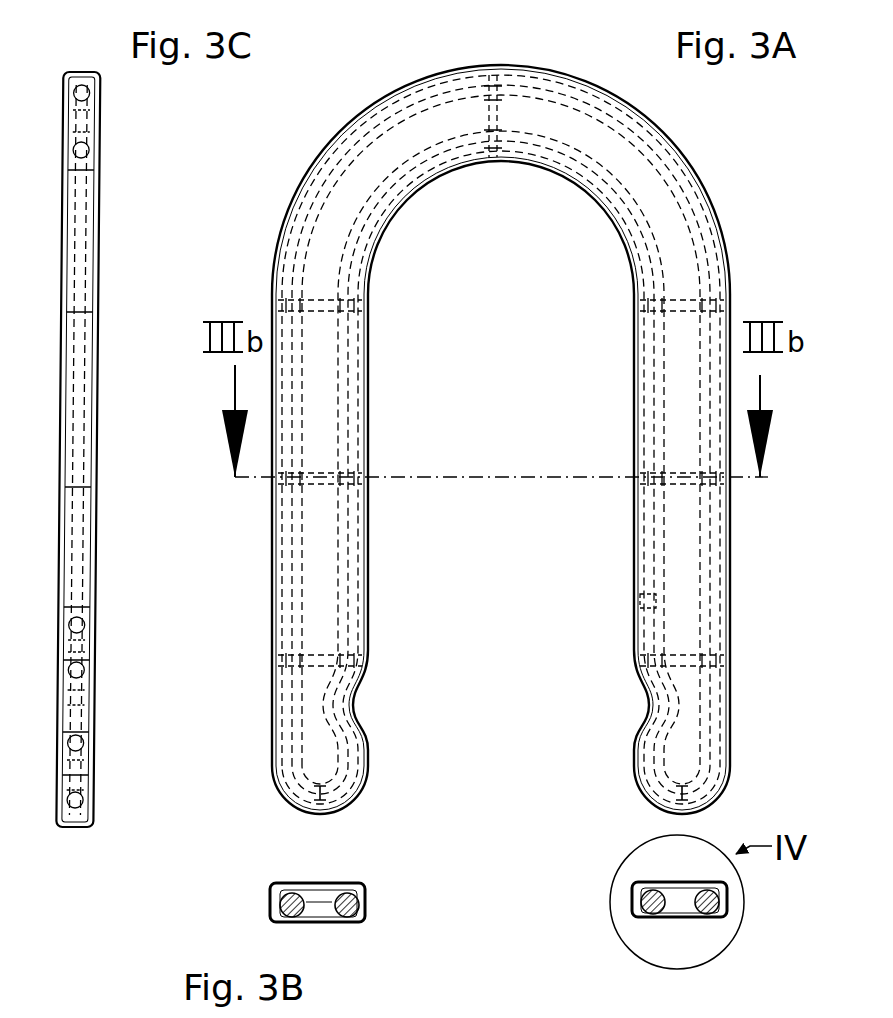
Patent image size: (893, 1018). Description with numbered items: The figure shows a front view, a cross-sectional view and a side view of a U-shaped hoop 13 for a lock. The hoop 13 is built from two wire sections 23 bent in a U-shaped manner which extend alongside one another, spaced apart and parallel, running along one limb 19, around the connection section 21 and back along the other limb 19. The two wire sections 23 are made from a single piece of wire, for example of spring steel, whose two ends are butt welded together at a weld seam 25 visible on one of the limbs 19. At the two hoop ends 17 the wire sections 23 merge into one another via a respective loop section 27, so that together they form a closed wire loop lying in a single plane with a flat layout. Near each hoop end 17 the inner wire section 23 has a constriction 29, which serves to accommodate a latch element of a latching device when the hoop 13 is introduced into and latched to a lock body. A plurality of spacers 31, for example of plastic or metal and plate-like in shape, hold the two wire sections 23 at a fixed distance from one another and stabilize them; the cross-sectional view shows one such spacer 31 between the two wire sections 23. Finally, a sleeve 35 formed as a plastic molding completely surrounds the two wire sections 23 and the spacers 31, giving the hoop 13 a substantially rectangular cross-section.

In FIG. 3A, the hoop 13 is at (383, 74).
In FIG. 3C, the hoop 13 is at (122, 173).
In FIG. 3A, the hoop ends 17 is at (248, 782).
In FIG. 3A, the limb 19 is at (276, 556).
In FIG. 3A, the connection section 21 is at (345, 136).
In FIG. 3A, the wire sections 23 is at (353, 253).
In FIG. 3B, the wire sections 23 is at (278, 906).
In FIG. 3A, the weld seam 25 is at (640, 601).
In FIG. 3A, the loop section 27 is at (334, 800).
In FIG. 3A, the constriction 29 is at (366, 705).
In FIG. 3A, the spacers 31 is at (318, 313).
In FIG. 3B, the spacers 31 is at (316, 900).
In FIG. 3A, the sleeve 35 is at (546, 116).
In FIG. 3B, the sleeve 35 is at (276, 888).